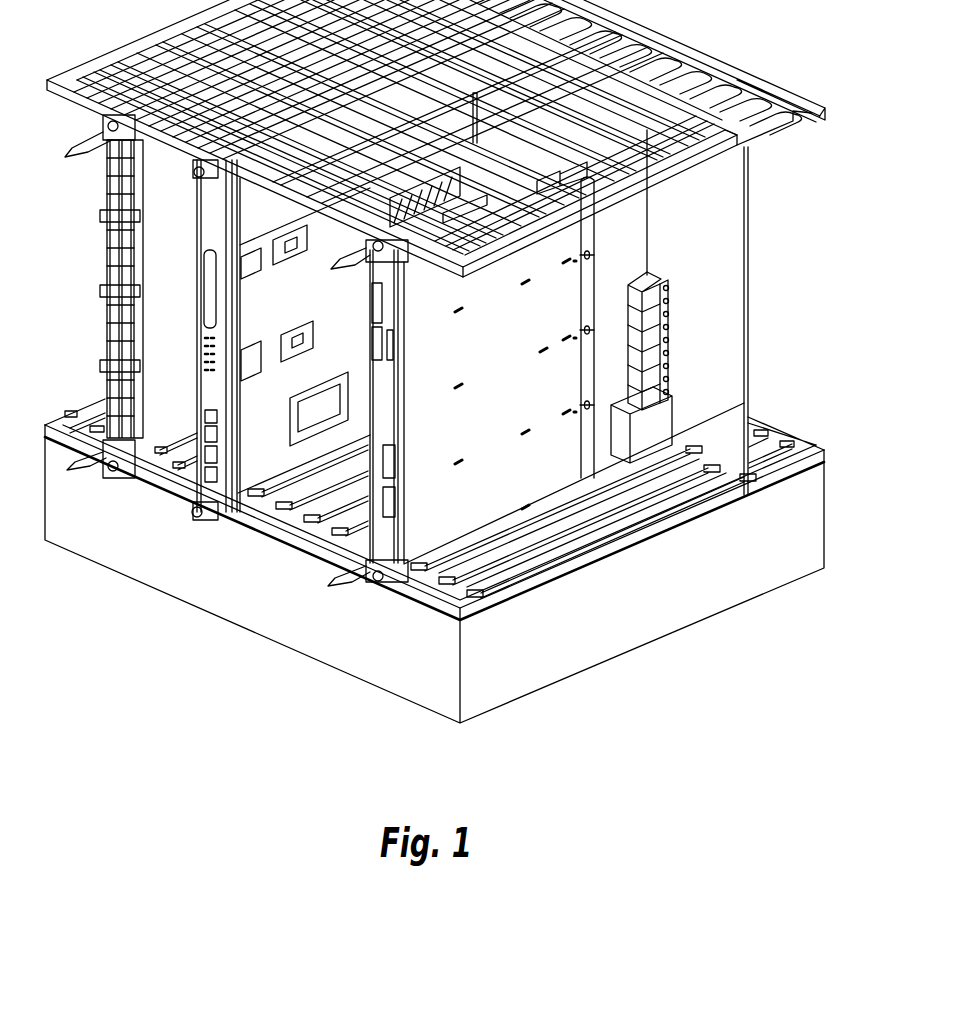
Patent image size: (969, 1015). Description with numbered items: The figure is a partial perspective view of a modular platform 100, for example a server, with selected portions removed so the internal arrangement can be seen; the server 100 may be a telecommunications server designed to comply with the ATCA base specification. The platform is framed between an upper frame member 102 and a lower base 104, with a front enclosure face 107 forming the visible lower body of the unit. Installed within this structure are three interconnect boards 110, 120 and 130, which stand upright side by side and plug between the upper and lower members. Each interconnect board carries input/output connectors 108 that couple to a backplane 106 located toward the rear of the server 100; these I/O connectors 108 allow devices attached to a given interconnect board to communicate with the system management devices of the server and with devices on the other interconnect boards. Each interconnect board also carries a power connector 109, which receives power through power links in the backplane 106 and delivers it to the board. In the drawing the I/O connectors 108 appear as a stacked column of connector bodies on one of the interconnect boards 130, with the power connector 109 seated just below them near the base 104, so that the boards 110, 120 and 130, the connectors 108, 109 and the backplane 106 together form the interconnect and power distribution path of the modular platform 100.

The modular platform 100 is at (689, 671).
The top frame 102 is at (695, 160).
The base 104 is at (688, 502).
The backplane 106 is at (704, 249).
The base enclosure 107 is at (522, 682).
The input/output (I/O) connectors 108 is at (668, 277).
The power connector 109 is at (672, 432).
The interconnect board 110 is at (107, 297).
The interconnect board 120 is at (213, 343).
The interconnect board 130 is at (380, 545).